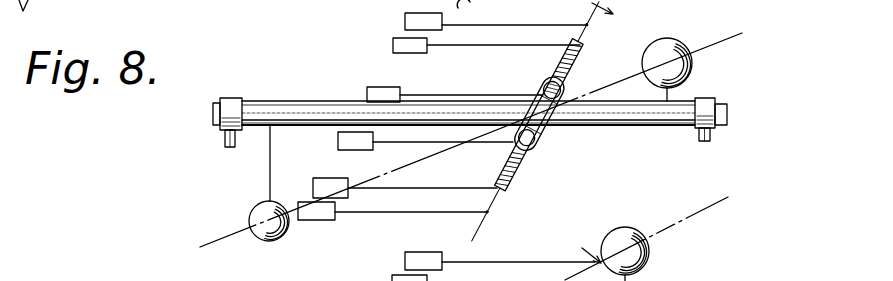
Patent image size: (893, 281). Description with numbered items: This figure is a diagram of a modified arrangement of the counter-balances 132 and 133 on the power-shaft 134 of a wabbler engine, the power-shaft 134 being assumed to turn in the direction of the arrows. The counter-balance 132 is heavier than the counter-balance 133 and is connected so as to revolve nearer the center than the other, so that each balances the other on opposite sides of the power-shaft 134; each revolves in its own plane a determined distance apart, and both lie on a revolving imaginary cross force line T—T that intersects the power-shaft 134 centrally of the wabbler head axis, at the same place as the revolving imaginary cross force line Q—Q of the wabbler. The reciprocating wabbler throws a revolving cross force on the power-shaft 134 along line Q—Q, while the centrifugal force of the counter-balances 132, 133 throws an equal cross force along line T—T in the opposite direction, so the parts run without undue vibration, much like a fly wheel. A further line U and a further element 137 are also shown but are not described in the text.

The wheel 132 is at (682, 32).
The wheel 133 is at (285, 252).
The shaft 134 is at (632, 122).
The wheel 137 is at (647, 253).
The axis T is at (217, 223).
The axis U is at (690, 230).
The axis Q is at (483, 235).